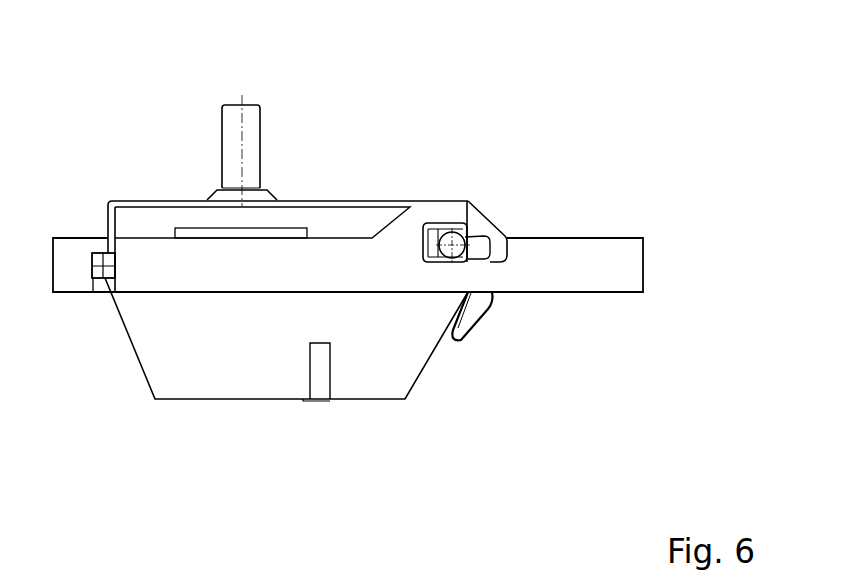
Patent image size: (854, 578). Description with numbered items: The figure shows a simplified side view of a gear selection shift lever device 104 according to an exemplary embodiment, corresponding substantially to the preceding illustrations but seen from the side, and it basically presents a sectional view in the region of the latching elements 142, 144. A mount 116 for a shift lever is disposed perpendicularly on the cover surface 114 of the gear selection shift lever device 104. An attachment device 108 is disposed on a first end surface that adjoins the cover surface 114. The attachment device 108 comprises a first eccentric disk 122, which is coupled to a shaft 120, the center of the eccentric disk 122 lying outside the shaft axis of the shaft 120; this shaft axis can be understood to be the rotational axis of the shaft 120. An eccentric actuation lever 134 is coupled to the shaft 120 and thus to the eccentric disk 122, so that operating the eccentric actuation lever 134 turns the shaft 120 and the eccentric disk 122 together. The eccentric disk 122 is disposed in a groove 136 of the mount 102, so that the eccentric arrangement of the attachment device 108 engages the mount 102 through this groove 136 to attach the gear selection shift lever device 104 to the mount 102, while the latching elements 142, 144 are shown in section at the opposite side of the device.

The mount 102 is at (572, 277).
The gear selection shift lever device 104 is at (425, 365).
The attachment device 108 is at (512, 210).
The cover surface 114 is at (363, 200).
The mount for a shift lever 116 is at (250, 148).
The shaft 120 is at (462, 261).
The first eccentric disk 122 is at (468, 232).
The eccentric actuation lever 134 is at (468, 318).
The groove 136 is at (438, 226).
The latching element 142 is at (93, 252).
The latching element 144 is at (103, 265).